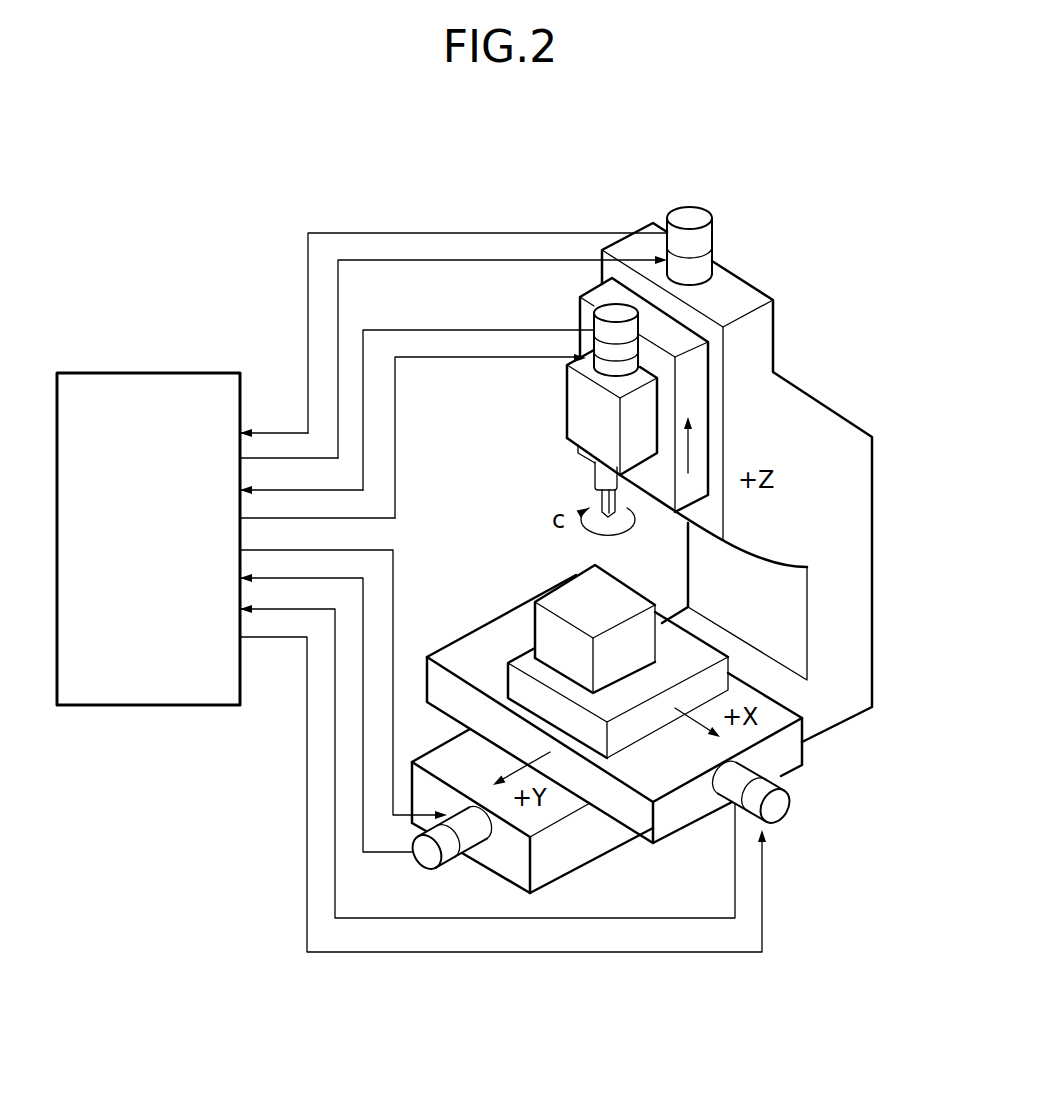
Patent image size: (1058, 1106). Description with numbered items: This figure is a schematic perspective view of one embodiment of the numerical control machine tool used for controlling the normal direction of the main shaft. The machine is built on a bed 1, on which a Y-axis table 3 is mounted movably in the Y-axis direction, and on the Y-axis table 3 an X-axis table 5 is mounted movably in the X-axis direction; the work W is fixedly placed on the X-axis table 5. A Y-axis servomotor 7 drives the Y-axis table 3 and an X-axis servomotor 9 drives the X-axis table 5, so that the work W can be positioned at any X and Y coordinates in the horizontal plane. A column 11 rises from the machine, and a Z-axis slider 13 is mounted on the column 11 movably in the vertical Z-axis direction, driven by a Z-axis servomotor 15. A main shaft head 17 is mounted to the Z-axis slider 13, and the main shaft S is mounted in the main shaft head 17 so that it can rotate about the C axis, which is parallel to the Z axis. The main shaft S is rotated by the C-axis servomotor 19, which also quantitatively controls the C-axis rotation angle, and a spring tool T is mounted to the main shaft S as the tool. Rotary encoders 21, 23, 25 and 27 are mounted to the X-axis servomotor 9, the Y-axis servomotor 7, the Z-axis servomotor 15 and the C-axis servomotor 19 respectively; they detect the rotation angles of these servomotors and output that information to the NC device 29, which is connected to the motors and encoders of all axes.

The bed 1 is at (562, 860).
The Y-axis table 3 is at (783, 753).
The X-axis table 5 is at (633, 735).
The Y-axis servomotor 7 is at (470, 843).
The X-axis servomotor 9 is at (727, 800).
The column 11 is at (855, 500).
The Z-axis slider 13 is at (698, 395).
The Z-axis servomotor 15 is at (703, 265).
The main shaft head 17 is at (577, 412).
The C-axis servomotor 19 is at (627, 358).
The rotary encoder 21 is at (780, 827).
The rotary encoder 23 is at (422, 855).
The rotary encoder 25 is at (693, 217).
The rotary encoder 27 is at (603, 317).
The NC device 29 is at (160, 350).
The main shaft S is at (600, 477).
The spring tool T is at (630, 497).
The work W is at (577, 593).